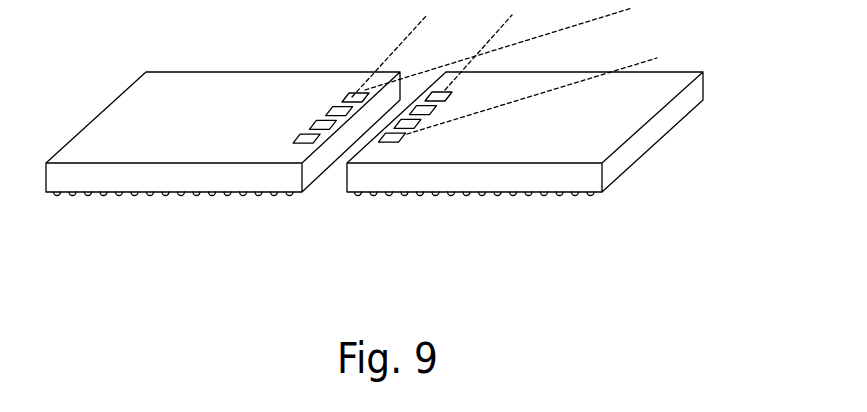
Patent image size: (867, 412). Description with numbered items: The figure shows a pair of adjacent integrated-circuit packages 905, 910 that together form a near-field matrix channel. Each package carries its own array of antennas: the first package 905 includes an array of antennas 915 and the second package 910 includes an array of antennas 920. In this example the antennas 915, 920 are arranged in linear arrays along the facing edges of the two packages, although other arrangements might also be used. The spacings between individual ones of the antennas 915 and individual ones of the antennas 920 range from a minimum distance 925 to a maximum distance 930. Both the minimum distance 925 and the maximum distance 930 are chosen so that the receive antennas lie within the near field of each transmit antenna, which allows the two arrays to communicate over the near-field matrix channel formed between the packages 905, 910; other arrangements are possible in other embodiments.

The integrated-circuit package 905 is at (233, 123).
The integrated-circuit package 910 is at (543, 130).
The array of antennas 915 is at (346, 94).
The array of antennas 920 is at (388, 143).
The minimum distance 925 is at (497, 30).
The maximum distance 930 is at (620, 15).